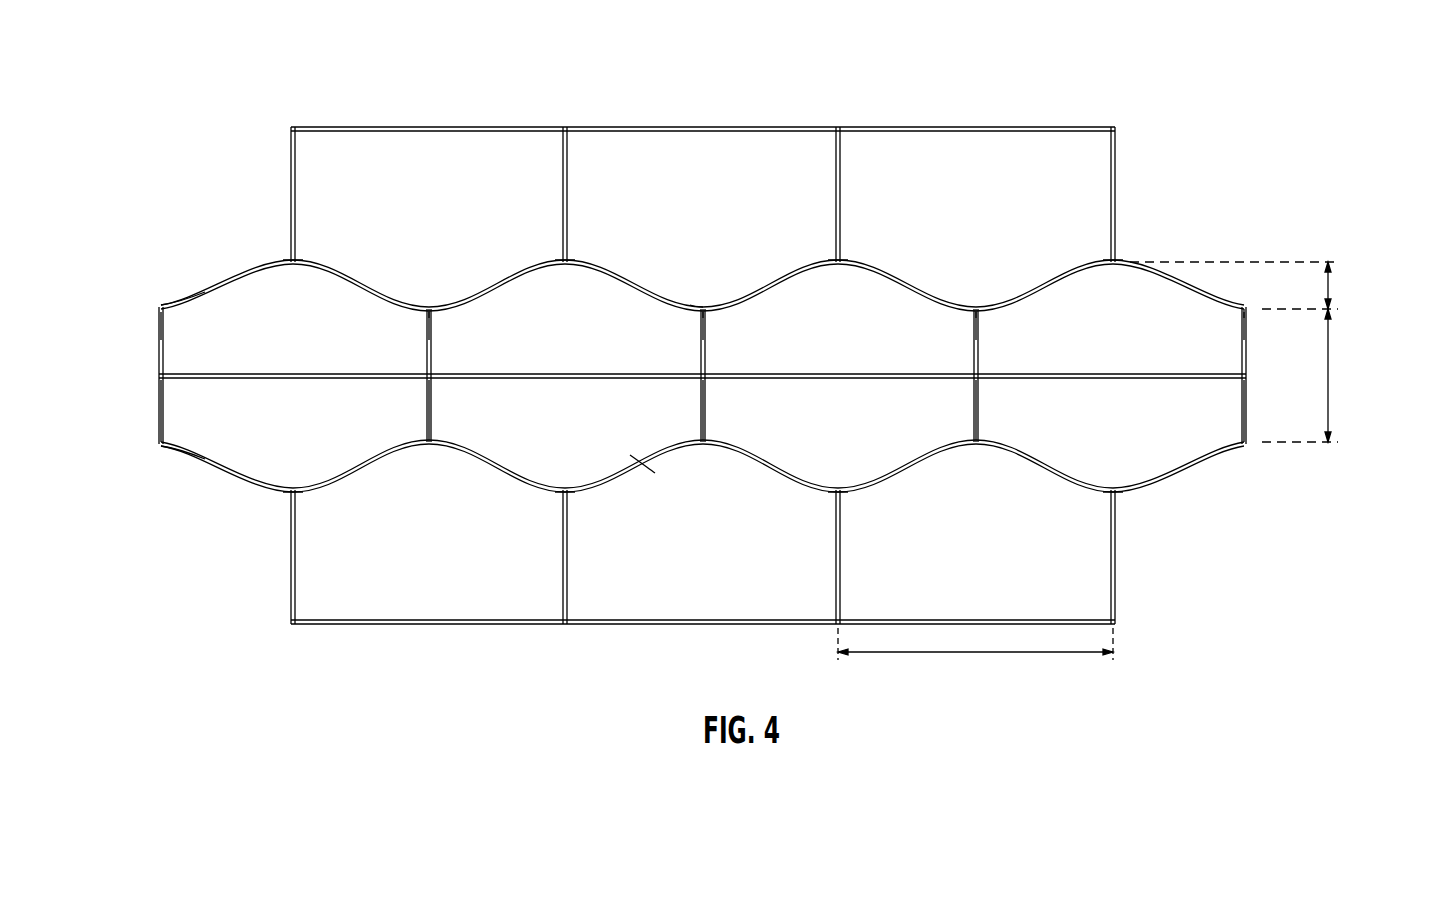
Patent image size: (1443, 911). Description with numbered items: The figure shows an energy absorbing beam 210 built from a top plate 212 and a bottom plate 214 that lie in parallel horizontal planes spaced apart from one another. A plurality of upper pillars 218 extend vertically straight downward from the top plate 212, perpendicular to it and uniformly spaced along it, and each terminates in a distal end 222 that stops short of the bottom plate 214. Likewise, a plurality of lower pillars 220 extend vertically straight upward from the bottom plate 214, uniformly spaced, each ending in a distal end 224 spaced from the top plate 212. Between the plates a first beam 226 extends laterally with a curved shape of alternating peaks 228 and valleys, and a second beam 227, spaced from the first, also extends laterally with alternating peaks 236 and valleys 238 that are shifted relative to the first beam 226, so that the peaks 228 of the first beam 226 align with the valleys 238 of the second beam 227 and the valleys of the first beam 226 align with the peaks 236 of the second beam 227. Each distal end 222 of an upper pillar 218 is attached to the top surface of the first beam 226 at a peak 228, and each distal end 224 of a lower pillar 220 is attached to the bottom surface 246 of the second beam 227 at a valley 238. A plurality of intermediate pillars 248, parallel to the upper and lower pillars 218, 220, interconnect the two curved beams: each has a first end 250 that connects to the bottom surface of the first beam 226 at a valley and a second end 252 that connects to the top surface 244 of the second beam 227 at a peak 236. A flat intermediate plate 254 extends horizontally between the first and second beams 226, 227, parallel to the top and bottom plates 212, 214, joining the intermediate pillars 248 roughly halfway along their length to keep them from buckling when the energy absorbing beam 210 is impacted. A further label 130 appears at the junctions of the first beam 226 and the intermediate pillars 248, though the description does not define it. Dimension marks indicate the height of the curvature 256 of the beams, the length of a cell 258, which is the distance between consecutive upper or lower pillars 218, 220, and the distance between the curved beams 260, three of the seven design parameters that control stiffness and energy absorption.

The energy absorbing beam 210 is at (265, 632).
The top plate 212 is at (350, 127).
The bottom plate 214 is at (470, 624).
The upper pillars 218 is at (291, 172).
The lower pillars 220 is at (291, 565).
The distal end of upper pillar 222 is at (300, 262).
The distal end of lower pillar 224 is at (291, 515).
The first beam 226 is at (213, 297).
The second beam 227 is at (210, 452).
The peaks of first beam 228 is at (265, 267).
The peaks of second beam 236 is at (187, 448).
The valleys of second beam 238 is at (296, 487).
The top surface of second beam 244 is at (665, 303).
The bottom surface of second beam 246 is at (650, 462).
The intermediate pillars 248 is at (159, 345).
The first end of intermediate pillar 250 is at (167, 338).
The second end of intermediate pillar 252 is at (159, 412).
The intermediate plate 254 is at (295, 372).
The joint / node 130 is at (425, 316).
The height of the curvature 256 is at (1342, 288).
The cell 258 is at (975, 653).
The distance between the curved beams 260 is at (1342, 378).